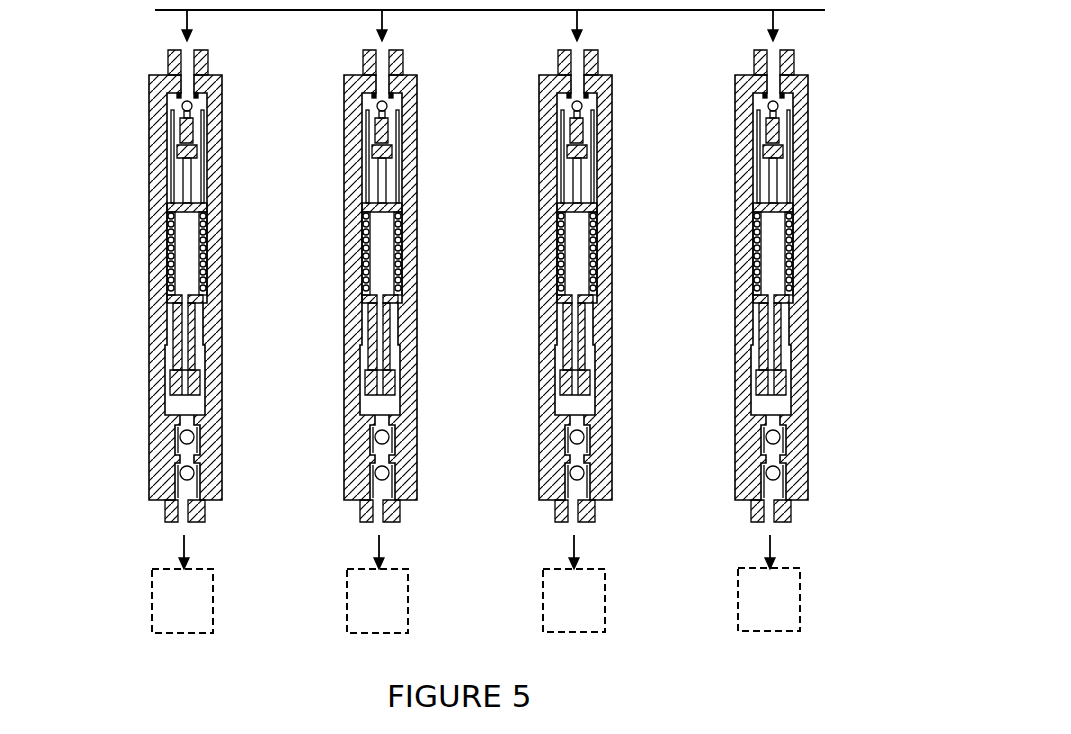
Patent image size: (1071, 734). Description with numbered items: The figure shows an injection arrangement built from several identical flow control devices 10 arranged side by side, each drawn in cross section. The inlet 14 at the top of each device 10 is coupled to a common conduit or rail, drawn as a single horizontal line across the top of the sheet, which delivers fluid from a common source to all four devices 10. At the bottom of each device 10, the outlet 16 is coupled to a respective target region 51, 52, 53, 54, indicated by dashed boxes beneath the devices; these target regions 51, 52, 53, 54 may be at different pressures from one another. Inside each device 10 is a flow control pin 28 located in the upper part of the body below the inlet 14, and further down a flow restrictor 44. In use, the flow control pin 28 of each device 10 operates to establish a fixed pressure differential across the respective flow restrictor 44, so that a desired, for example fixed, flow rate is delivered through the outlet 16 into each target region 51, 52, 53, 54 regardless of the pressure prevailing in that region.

The device 10 is at (97, 109).
The inlet 14 is at (183, 70).
The outlet 16 is at (180, 506).
The flow control pin 28 is at (180, 137).
The flow restrictor 44 is at (170, 175).
The target region 51 is at (176, 603).
The target region 52 is at (368, 602).
The target region 53 is at (560, 602).
The target region 54 is at (768, 600).